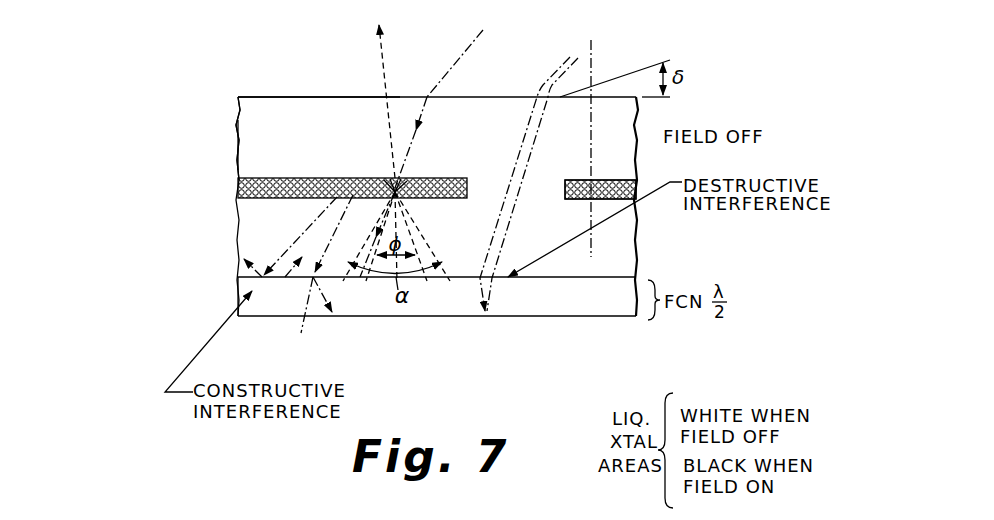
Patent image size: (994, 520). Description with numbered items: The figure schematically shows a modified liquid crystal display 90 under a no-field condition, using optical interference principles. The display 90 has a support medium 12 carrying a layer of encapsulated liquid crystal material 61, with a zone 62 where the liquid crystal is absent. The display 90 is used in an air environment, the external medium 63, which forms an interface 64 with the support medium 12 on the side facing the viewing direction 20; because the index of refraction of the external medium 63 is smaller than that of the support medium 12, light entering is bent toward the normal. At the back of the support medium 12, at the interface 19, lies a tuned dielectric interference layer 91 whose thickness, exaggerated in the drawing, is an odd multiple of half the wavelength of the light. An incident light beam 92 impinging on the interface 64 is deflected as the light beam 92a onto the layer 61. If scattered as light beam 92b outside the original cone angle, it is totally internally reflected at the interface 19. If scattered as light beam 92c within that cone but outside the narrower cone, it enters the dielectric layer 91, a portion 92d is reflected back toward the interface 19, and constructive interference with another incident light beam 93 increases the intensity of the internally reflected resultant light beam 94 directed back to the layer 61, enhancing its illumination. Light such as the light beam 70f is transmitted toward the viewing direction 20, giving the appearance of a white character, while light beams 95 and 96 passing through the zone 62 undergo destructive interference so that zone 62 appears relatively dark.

The liquid crystal display 90 is at (290, 64).
The viewing direction 20 is at (437, 162).
The external medium 63 is at (298, 106).
The interface 64 is at (326, 97).
The support medium 12 is at (257, 137).
The encapsulated liquid crystal layer 61 is at (221, 191).
The zone 62 is at (542, 177).
The incident light beam 93 is at (350, 177).
The interface 19 is at (238, 270).
The tuned dielectric interference layer 91 is at (238, 293).
The light beam 70f is at (384, 52).
The incident light beam 92 is at (470, 44).
The light beam 92a is at (423, 110).
The light beam 92b is at (303, 228).
The light beam 92c is at (336, 292).
The reflected portion 92d is at (315, 275).
The internally reflected resultant light beam 94 is at (255, 270).
The light beam 95 is at (568, 57).
The light beam 96 is at (579, 63).